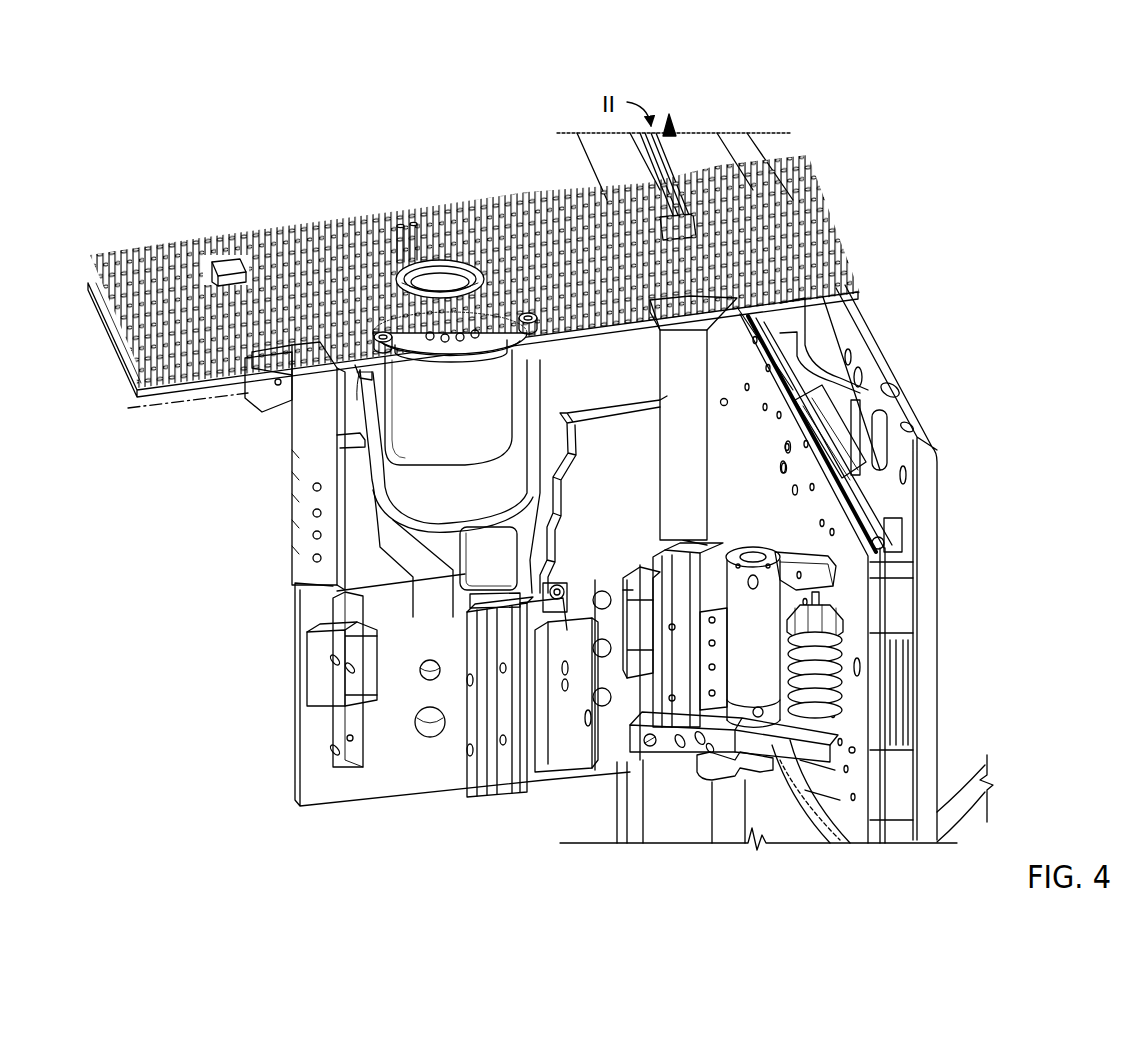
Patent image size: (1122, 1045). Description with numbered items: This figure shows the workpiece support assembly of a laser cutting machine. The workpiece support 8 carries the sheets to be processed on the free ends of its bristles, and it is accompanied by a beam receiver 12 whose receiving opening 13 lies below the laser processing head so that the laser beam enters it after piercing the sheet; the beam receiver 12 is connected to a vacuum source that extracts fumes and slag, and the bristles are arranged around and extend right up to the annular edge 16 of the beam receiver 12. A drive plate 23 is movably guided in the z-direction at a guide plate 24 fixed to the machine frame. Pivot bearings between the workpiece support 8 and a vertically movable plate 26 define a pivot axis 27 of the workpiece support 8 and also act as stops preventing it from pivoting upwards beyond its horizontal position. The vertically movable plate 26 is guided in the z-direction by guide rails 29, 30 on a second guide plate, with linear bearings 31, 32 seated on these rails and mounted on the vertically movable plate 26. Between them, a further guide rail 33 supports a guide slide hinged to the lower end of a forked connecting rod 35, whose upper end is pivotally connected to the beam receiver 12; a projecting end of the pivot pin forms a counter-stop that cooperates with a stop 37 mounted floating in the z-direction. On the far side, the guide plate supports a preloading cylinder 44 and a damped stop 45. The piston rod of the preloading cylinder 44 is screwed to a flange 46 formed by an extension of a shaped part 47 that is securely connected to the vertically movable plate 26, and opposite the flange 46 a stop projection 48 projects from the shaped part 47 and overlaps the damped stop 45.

The workpiece support 8 is at (336, 215).
The beam receiver 12 is at (399, 222).
The receiving opening 13 is at (437, 228).
The annular edge 16 is at (478, 198).
The drive plate 23 is at (815, 508).
The guide plate 24 is at (878, 362).
The vertically movable plate 26 is at (315, 790).
The pivot axis 27 is at (200, 403).
The guide rail 29 is at (345, 728).
The guide rail 30 is at (670, 718).
The linear bearing 31 is at (312, 648).
The linear bearing 32 is at (642, 705).
The guide rail 33 is at (487, 795).
The forked connecting rod 35 is at (398, 523).
The stop 37 is at (538, 786).
The preloading cylinder 44 is at (767, 690).
The damped stop 45 is at (812, 706).
The flange 46 is at (832, 752).
The shaped part 47 is at (730, 788).
The stop projection 48 is at (820, 566).